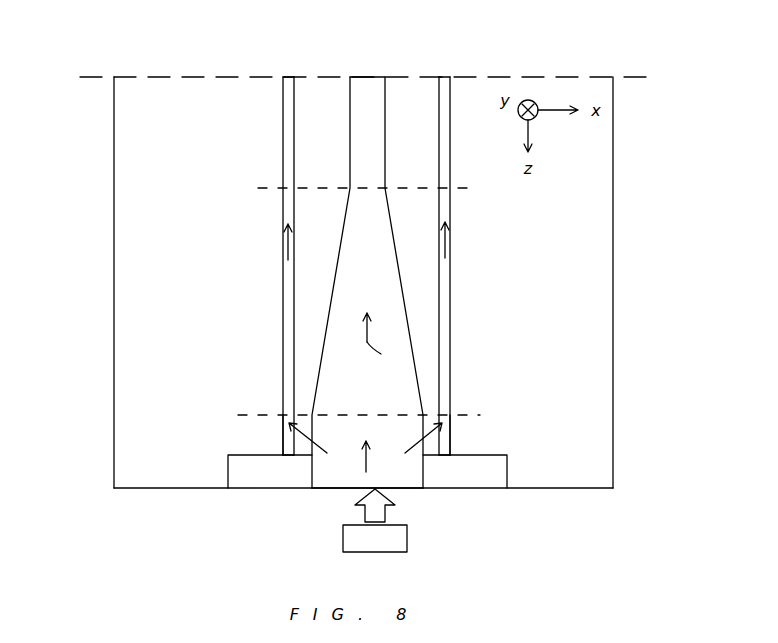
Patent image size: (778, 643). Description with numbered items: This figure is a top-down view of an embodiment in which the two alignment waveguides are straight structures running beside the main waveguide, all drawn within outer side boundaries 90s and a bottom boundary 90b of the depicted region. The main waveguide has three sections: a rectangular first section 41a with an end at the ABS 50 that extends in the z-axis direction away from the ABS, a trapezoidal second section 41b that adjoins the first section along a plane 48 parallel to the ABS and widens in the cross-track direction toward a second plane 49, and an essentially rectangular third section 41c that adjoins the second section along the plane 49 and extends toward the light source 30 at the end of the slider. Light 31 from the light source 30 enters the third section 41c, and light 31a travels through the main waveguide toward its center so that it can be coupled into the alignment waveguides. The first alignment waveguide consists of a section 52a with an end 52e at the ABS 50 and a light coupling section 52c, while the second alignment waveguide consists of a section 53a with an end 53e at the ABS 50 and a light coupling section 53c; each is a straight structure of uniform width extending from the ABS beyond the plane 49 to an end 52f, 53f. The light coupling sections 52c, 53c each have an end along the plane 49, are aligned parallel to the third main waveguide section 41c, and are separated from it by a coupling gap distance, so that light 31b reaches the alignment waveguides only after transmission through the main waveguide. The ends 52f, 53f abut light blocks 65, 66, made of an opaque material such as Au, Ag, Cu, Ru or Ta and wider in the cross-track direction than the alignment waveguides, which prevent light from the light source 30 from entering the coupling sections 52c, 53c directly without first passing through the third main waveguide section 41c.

The light source 30 is at (408, 540).
The light 31 is at (364, 520).
The light 31a is at (384, 397).
The light traveling through side strips 31b is at (283, 241).
The first section of main waveguide 41a is at (365, 80).
The second section of main waveguide 41b is at (332, 378).
The third section of main waveguide 41c is at (323, 489).
The plane 48 is at (367, 188).
The plane 49 is at (357, 413).
The ABS 50 is at (362, 77).
The section of first alignment waveguide 52a is at (283, 292).
The light coupling section of first alignment waveguide 52c is at (283, 447).
The end of first alignment waveguide section 52e is at (290, 86).
The end of first alignment waveguide 52f is at (288, 457).
The section of second alignment waveguide 53a is at (451, 292).
The light coupling section of second alignment waveguide 53c is at (451, 440).
The end of second alignment waveguide section 53e is at (445, 86).
The end of second alignment waveguide 53f is at (443, 457).
The light block 65 is at (243, 471).
The light block 66 is at (488, 470).
The housing bottom 90b is at (131, 489).
The housing side 90s is at (114, 330).